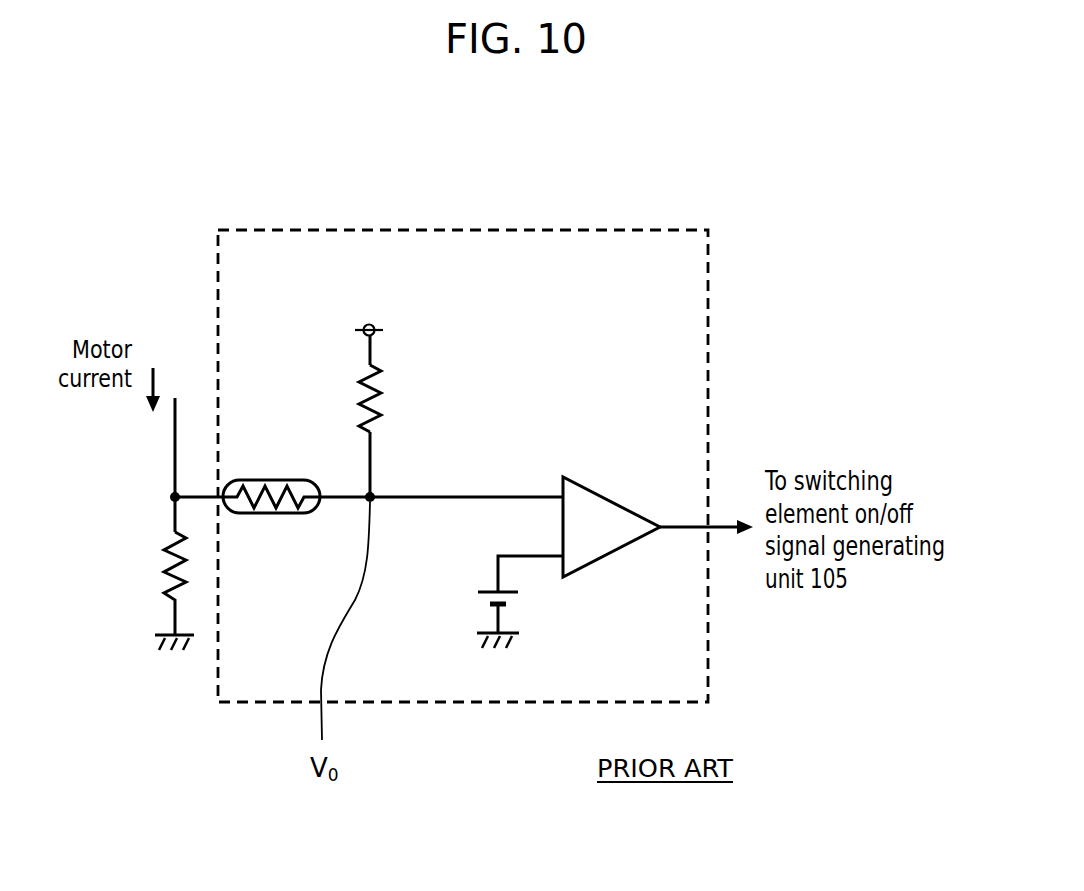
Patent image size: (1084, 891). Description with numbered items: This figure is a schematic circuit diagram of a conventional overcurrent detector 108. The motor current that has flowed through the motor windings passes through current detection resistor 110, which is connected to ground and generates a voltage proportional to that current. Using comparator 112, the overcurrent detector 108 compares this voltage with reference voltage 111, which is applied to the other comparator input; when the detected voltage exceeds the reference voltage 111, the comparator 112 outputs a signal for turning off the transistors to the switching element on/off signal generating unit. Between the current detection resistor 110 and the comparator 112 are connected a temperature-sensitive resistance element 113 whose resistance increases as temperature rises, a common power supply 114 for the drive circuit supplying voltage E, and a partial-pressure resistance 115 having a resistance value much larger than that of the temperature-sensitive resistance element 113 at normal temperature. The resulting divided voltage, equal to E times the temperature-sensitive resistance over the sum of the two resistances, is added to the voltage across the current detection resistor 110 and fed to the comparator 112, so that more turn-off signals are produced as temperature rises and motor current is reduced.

The overcurrent detector 108 is at (608, 230).
The current detection resistor 110 is at (163, 595).
The reference voltage 111 is at (480, 590).
The comparator 112 is at (603, 497).
The temperature-sensitive resistance element 113 is at (282, 478).
The common power supply 114 is at (370, 325).
The partial-pressure resistance 115 is at (365, 380).